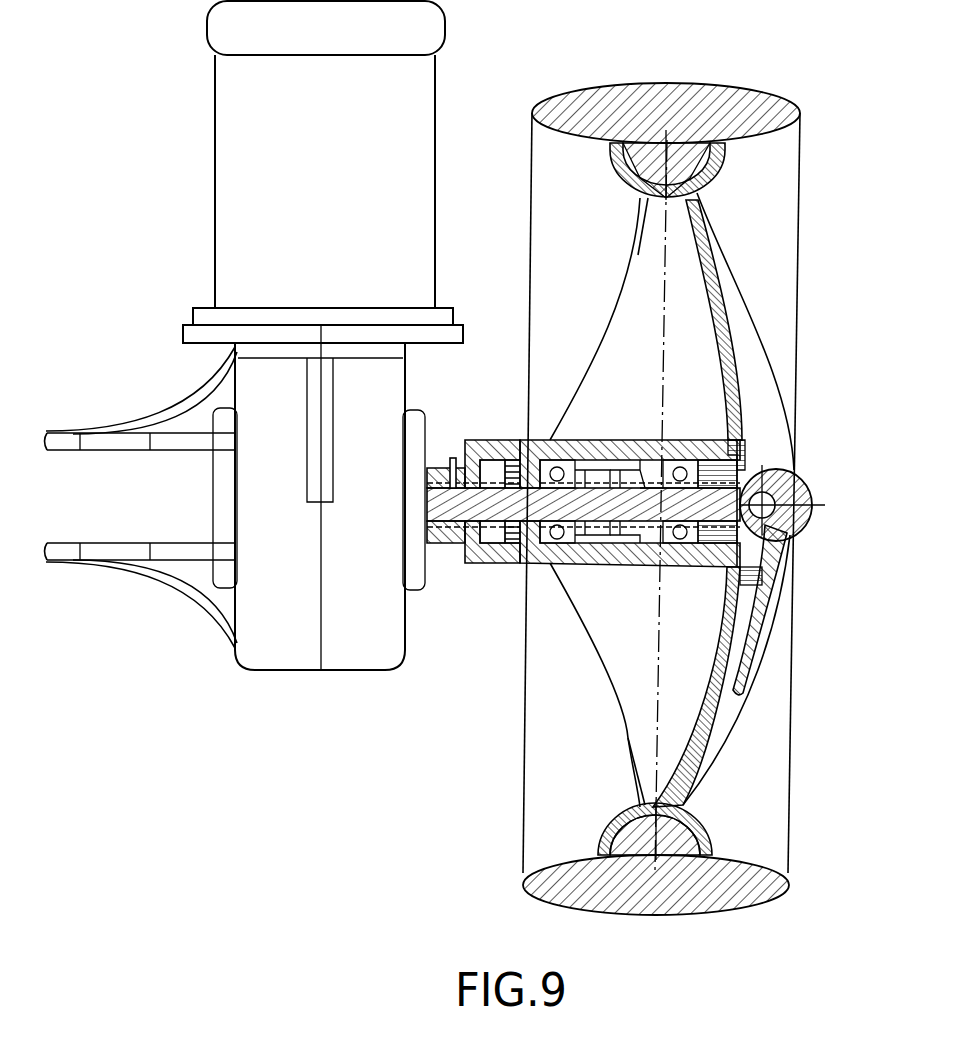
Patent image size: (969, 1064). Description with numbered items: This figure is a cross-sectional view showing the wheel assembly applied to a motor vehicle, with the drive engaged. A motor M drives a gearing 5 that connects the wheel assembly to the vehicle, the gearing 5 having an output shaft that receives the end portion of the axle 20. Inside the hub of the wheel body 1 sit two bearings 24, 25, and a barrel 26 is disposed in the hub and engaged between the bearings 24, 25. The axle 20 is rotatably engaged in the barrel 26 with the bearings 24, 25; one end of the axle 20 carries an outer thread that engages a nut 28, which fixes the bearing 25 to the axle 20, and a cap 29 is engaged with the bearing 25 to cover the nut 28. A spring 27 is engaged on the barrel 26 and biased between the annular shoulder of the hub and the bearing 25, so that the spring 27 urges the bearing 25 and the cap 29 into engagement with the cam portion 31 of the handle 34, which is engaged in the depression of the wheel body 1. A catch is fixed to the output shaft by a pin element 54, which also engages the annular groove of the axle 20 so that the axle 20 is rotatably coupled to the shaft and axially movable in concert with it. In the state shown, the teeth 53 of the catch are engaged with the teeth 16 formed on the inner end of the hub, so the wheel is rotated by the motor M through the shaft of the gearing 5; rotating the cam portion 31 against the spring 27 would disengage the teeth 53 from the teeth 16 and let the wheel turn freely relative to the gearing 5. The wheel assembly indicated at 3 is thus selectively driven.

The motor M is at (222, 208).
The gearing 5 is at (348, 663).
The wheel body 1 is at (737, 300).
The agitator blade assembly 3 is at (800, 568).
The handle 34 is at (768, 637).
The cam portion 31 is at (805, 490).
The cap 29 is at (742, 460).
The teeth 16 is at (500, 440).
The axle 20 is at (596, 440).
The teeth 53 is at (468, 440).
The pin element 54 is at (451, 458).
The bearing 24 is at (550, 567).
The bearing 25 is at (677, 462).
The barrel 26 is at (608, 565).
The spring 27 is at (641, 565).
The nut 28 is at (705, 444).